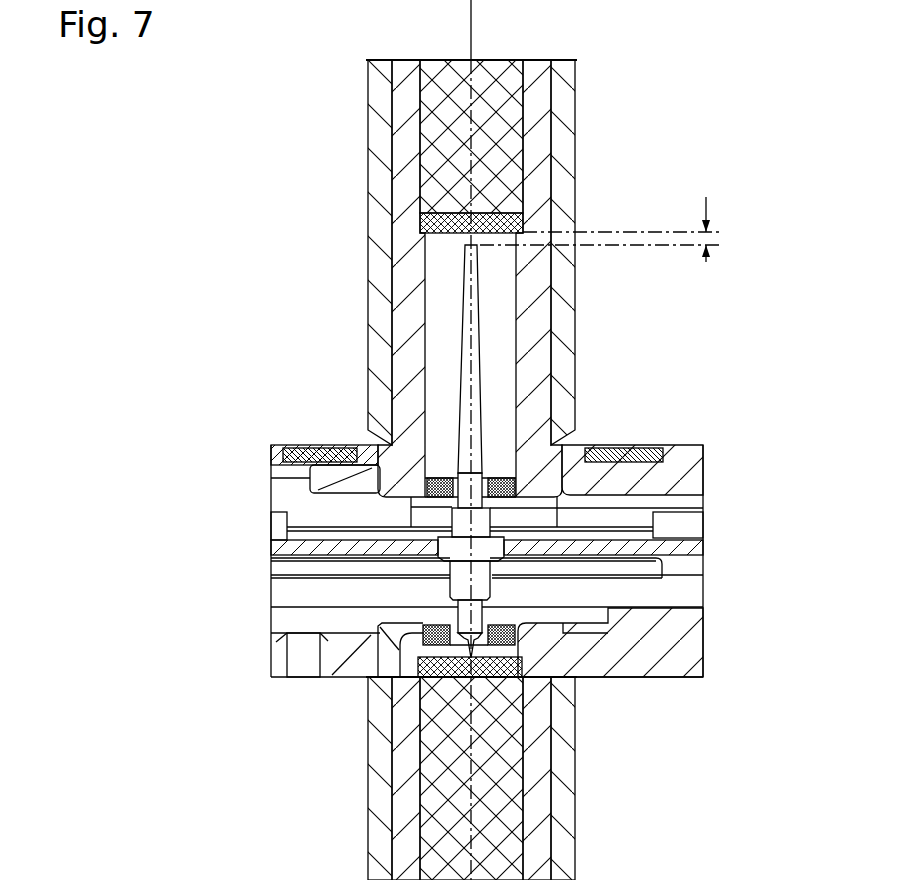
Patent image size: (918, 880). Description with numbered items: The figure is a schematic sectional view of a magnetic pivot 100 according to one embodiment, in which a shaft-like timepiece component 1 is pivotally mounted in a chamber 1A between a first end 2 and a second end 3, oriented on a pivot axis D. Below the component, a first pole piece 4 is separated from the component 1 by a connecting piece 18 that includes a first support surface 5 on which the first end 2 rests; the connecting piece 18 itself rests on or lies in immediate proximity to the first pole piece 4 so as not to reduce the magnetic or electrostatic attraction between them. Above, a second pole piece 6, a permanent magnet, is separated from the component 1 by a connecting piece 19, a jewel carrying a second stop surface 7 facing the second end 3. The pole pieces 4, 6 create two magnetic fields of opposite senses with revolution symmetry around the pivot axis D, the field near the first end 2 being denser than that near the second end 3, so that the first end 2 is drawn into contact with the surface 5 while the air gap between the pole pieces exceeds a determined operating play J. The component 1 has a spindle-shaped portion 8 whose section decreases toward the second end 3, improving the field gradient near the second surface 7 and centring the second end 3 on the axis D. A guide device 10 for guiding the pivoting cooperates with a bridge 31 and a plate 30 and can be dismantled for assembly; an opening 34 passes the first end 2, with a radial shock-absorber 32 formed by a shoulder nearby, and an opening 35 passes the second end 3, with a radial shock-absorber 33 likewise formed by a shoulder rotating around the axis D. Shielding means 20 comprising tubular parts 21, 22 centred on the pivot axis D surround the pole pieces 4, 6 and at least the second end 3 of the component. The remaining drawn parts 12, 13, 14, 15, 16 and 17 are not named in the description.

The magnetic pivot 100 is at (728, 55).
The pivot axis D is at (466, 22).
The operating play J is at (609, 229).
The shielding means 20 is at (447, 252).
The tubular part 22 is at (567, 125).
The inner tube wall 16 is at (414, 135).
The inner tube 13 is at (545, 83).
The second pole piece 6 is at (503, 82).
The connecting piece 19 is at (447, 208).
The inner surface 17 is at (425, 155).
The chamber 1A is at (494, 393).
The spindle-shaped portion 8 is at (541, 482).
The first support surface 5 is at (502, 647).
The second end 3 is at (462, 243).
The second stop surface 7 is at (506, 242).
The guide device 10 is at (431, 242).
The first end 2 is at (453, 675).
The bridge 31 is at (419, 534).
The radial shock-absorber 33 is at (386, 443).
The opening 35 is at (499, 470).
The timepiece component 1 is at (680, 548).
The opening 34 is at (493, 611).
The plate 30 is at (419, 660).
The radial shock-absorber 32 is at (410, 667).
The connecting piece 18 is at (508, 665).
The tubular part 21 is at (562, 823).
The inner tube 14 is at (516, 712).
The inner tube 12 is at (540, 848).
The first pole piece 4 is at (512, 755).
The core region 15 is at (526, 768).